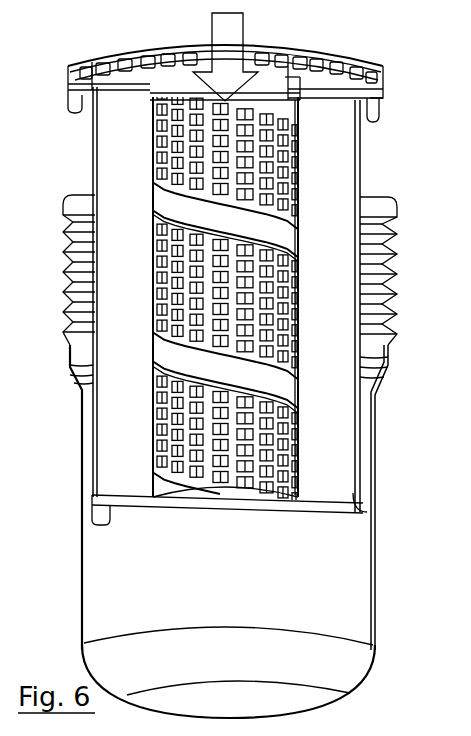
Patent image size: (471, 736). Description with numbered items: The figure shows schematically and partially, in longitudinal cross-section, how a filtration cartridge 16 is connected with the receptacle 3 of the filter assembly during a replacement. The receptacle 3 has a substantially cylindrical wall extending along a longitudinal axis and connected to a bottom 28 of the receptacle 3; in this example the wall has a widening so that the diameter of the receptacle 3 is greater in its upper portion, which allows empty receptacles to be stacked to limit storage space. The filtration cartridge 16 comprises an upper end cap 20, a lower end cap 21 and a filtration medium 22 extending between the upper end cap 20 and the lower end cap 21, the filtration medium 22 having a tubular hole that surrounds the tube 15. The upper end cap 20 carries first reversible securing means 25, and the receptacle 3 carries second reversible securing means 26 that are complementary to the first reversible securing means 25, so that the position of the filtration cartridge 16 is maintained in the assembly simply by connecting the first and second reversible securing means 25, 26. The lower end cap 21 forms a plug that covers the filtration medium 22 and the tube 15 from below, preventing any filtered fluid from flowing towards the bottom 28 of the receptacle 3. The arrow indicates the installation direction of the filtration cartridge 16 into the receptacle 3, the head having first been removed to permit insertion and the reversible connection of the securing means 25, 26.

The receptacle 3 is at (375, 600).
The tube 15 is at (293, 457).
The filtration cartridge 16 is at (328, 178).
The upper end cap 20 is at (343, 58).
The lower end cap 21 is at (373, 512).
The filtration medium 22 is at (333, 350).
The first reversible securing means 25 is at (378, 110).
The second reversible securing means 26 is at (388, 240).
The bottom 28 is at (318, 697).